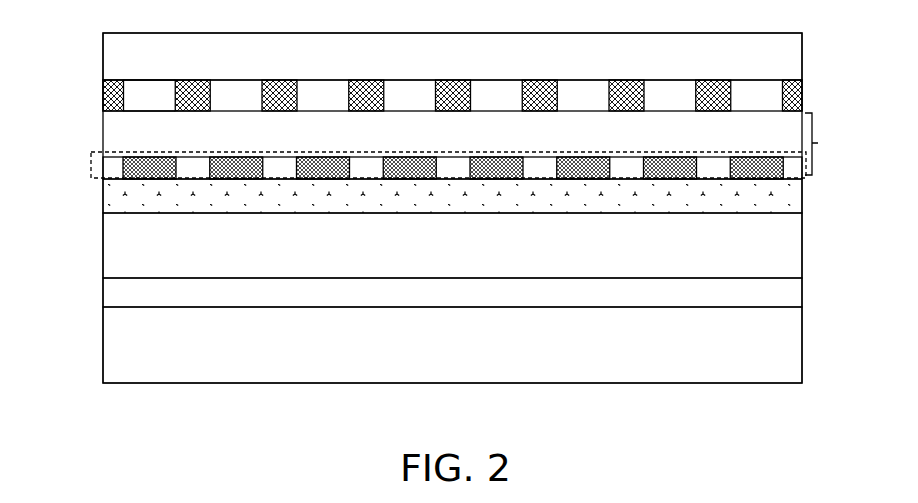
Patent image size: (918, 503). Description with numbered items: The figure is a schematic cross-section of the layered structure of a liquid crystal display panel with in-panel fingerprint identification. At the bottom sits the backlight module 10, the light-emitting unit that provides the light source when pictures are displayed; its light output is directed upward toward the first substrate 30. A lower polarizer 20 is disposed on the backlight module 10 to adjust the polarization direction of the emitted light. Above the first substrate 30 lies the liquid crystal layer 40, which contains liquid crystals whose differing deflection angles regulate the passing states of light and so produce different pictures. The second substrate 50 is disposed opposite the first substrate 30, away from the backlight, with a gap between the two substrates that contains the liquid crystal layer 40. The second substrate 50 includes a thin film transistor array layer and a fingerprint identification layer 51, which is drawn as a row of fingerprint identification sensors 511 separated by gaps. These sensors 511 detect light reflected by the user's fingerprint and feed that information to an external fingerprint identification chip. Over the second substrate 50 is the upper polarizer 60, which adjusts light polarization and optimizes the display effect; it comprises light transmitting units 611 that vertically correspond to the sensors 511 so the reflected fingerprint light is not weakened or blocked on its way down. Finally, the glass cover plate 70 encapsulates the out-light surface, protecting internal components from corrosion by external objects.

The backlight module 10 is at (802, 343).
The lower polarizer 20 is at (802, 292).
The first substrate 30 is at (802, 244).
The liquid crystal layer 40 is at (802, 193).
The second substrate 50 is at (825, 144).
The fingerprint identification layer 51 is at (91, 162).
The fingerprint identification sensor 511 is at (148, 162).
The upper polarizer 60 is at (802, 90).
The light transmitting unit 611 is at (148, 89).
The glass cover plate 70 is at (802, 46).